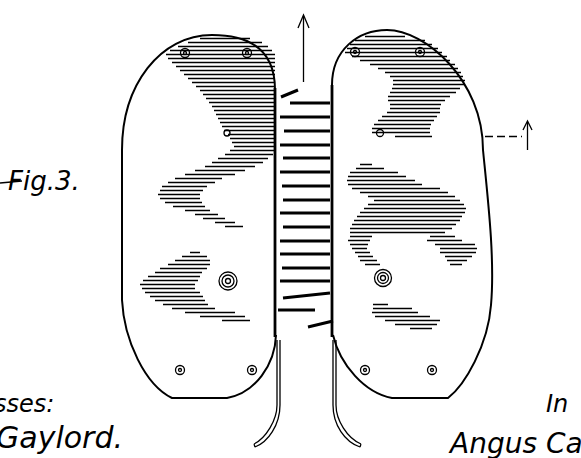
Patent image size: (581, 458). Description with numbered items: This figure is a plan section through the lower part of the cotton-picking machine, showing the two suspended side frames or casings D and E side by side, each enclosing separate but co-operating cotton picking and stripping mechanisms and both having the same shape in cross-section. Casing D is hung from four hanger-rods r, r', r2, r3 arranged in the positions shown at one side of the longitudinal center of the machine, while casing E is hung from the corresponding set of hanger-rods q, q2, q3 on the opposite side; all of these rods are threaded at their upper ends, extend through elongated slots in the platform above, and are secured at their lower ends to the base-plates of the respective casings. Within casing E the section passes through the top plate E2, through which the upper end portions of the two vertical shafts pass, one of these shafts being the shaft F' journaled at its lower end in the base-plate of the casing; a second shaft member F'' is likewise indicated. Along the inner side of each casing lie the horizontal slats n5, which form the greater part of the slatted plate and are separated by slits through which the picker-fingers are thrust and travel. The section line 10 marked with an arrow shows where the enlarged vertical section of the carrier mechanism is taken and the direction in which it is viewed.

The casing D is at (132, 254).
The casing E is at (426, 214).
The top plate E2 is at (412, 215).
The hanger-rod r' is at (161, 51).
The hanger-rod r3 is at (252, 52).
The hanger-rod r is at (173, 355).
The hanger-rod r2 is at (244, 354).
The hanger-rod q is at (350, 52).
The hanger-rod q3 is at (425, 52).
The hanger-rod q2 is at (433, 365).
The vertical shaft F' is at (400, 274).
The small pivot pin F'' is at (402, 127).
The horizontal slats n5 is at (357, 420).
The section line 10 is at (522, 135).